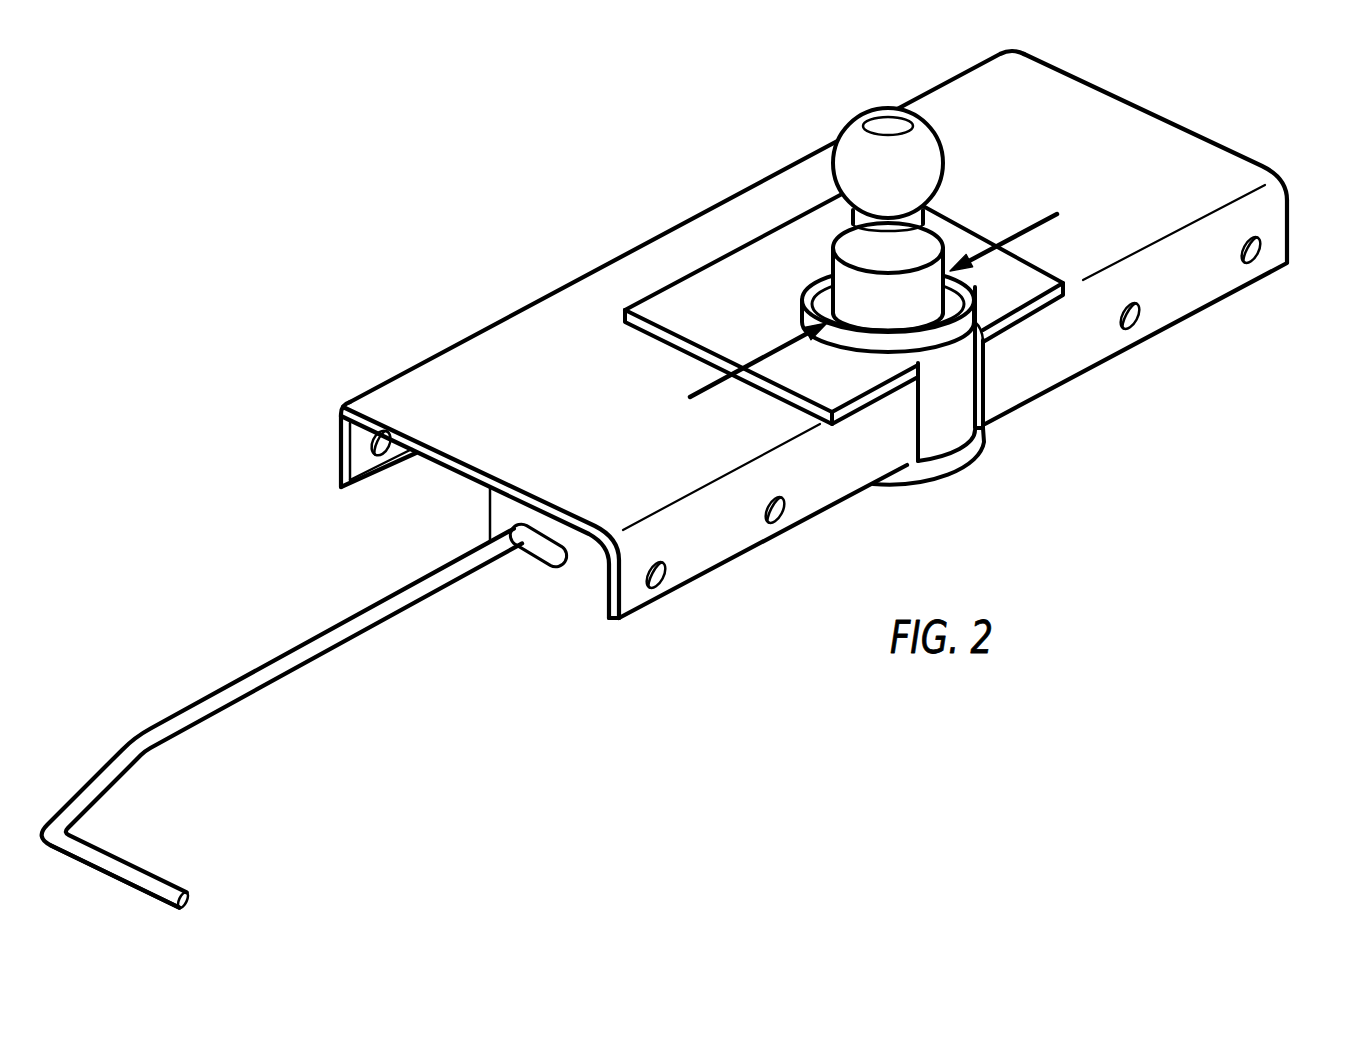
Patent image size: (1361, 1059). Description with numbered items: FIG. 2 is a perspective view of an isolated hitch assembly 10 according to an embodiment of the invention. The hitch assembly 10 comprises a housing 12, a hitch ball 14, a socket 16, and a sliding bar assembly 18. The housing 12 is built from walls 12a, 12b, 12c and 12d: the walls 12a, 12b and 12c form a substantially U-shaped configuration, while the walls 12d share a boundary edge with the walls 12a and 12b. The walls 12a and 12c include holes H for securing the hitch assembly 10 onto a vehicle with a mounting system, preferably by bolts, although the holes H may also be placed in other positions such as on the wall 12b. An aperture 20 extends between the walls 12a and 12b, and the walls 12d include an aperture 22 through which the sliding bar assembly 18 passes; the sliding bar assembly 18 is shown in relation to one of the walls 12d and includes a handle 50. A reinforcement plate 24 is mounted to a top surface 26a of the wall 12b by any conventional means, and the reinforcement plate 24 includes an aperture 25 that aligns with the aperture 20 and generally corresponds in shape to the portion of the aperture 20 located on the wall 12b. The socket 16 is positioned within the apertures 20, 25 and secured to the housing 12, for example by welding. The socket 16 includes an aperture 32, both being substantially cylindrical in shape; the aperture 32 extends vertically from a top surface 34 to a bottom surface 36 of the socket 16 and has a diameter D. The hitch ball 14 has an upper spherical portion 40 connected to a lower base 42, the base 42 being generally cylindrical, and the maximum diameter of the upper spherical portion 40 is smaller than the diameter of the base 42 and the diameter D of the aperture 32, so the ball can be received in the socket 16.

The hitch assembly 10 is at (388, 222).
The housing 12 is at (437, 465).
The wall 12a is at (1183, 282).
The wall 12b is at (1181, 170).
The wall 12c is at (368, 464).
The wall 12d is at (596, 577).
The hitch ball 14 is at (873, 202).
The socket 16 is at (965, 418).
The sliding bar assembly 18 is at (315, 664).
The aperture 20 is at (978, 392).
The aperture 22 is at (543, 563).
The reinforcement plate 24 is at (745, 313).
The aperture 25 is at (841, 352).
The top surface 26a is at (610, 428).
The aperture 32 is at (949, 272).
The top surface 34 is at (816, 282).
The bottom surface 36 is at (935, 480).
The upper spherical portion 40 is at (891, 190).
The lower base 42 is at (894, 316).
The handle 50 is at (247, 700).
The holes H is at (372, 443).
The diameter D is at (886, 294).